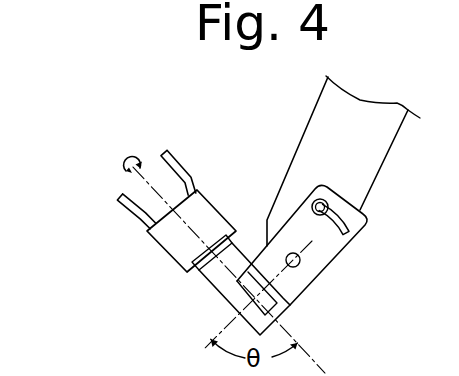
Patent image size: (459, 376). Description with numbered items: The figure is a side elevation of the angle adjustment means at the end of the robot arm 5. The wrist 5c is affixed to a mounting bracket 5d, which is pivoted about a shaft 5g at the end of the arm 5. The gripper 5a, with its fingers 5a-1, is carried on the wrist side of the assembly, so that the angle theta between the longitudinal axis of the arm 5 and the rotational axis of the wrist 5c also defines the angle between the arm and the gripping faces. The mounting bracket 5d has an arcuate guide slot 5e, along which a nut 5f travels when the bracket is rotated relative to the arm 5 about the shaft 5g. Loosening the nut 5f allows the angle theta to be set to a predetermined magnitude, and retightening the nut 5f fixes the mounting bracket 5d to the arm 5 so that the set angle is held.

The robot arm 5 is at (380, 148).
The gripper 5a is at (165, 249).
The fingers 5a-1 is at (169, 157).
The wrist 5c is at (216, 288).
The mounting bracket 5d is at (322, 254).
The arcuate guide slot 5e is at (352, 229).
The nut 5f is at (318, 203).
The shaft 5g is at (296, 268).